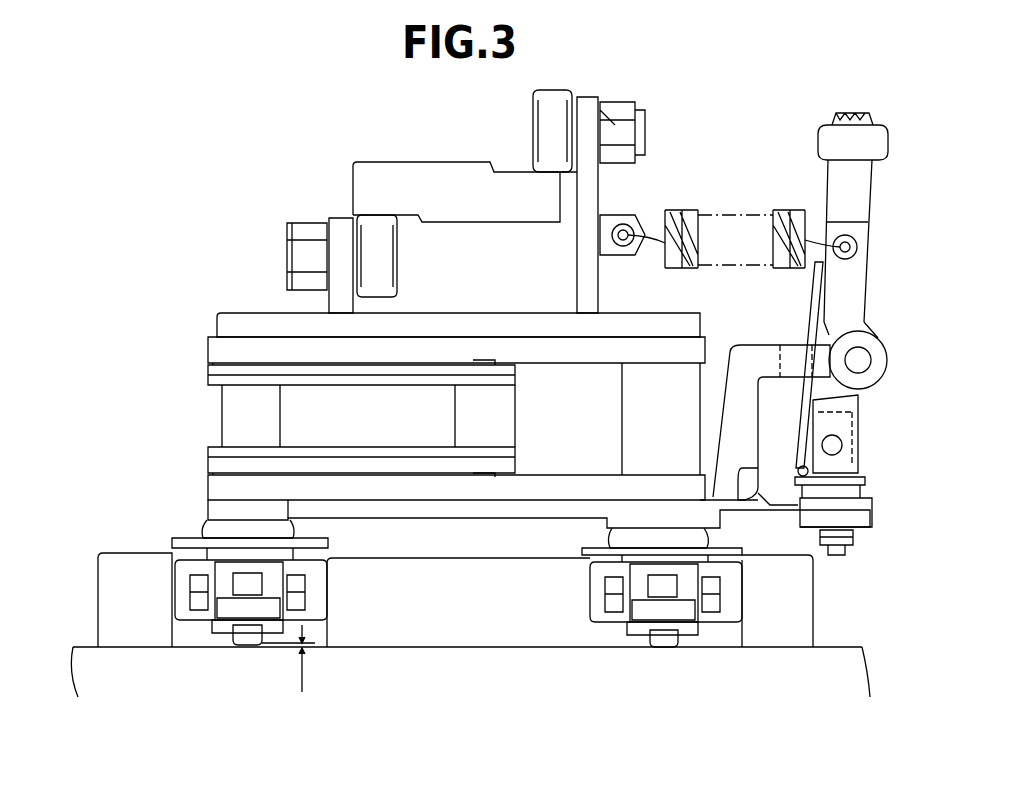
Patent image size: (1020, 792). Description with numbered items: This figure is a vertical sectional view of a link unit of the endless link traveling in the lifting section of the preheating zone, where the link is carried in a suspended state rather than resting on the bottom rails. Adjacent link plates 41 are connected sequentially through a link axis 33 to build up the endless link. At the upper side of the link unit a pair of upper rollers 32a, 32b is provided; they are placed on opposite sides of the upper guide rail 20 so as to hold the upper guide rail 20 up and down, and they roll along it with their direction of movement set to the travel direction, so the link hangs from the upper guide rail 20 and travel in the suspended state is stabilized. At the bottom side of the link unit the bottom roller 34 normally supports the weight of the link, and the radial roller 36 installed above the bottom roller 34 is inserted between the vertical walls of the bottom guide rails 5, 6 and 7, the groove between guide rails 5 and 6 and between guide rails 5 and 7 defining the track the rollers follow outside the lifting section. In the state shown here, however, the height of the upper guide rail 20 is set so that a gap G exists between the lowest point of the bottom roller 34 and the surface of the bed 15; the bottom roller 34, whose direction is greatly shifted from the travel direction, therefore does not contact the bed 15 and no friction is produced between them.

The guide rail 5 is at (440, 630).
The guide rail 6 is at (135, 620).
The guide rail 7 is at (783, 642).
The bed 15 is at (843, 673).
The upper guide rail 20 is at (348, 187).
The upper roller 32a is at (530, 125).
The upper roller 32b is at (380, 268).
The link axis 33 is at (233, 412).
The bottom roller 34 is at (252, 637).
The radial roller 36 is at (322, 592).
The link plate 41 is at (213, 315).
The gap G is at (288, 670).